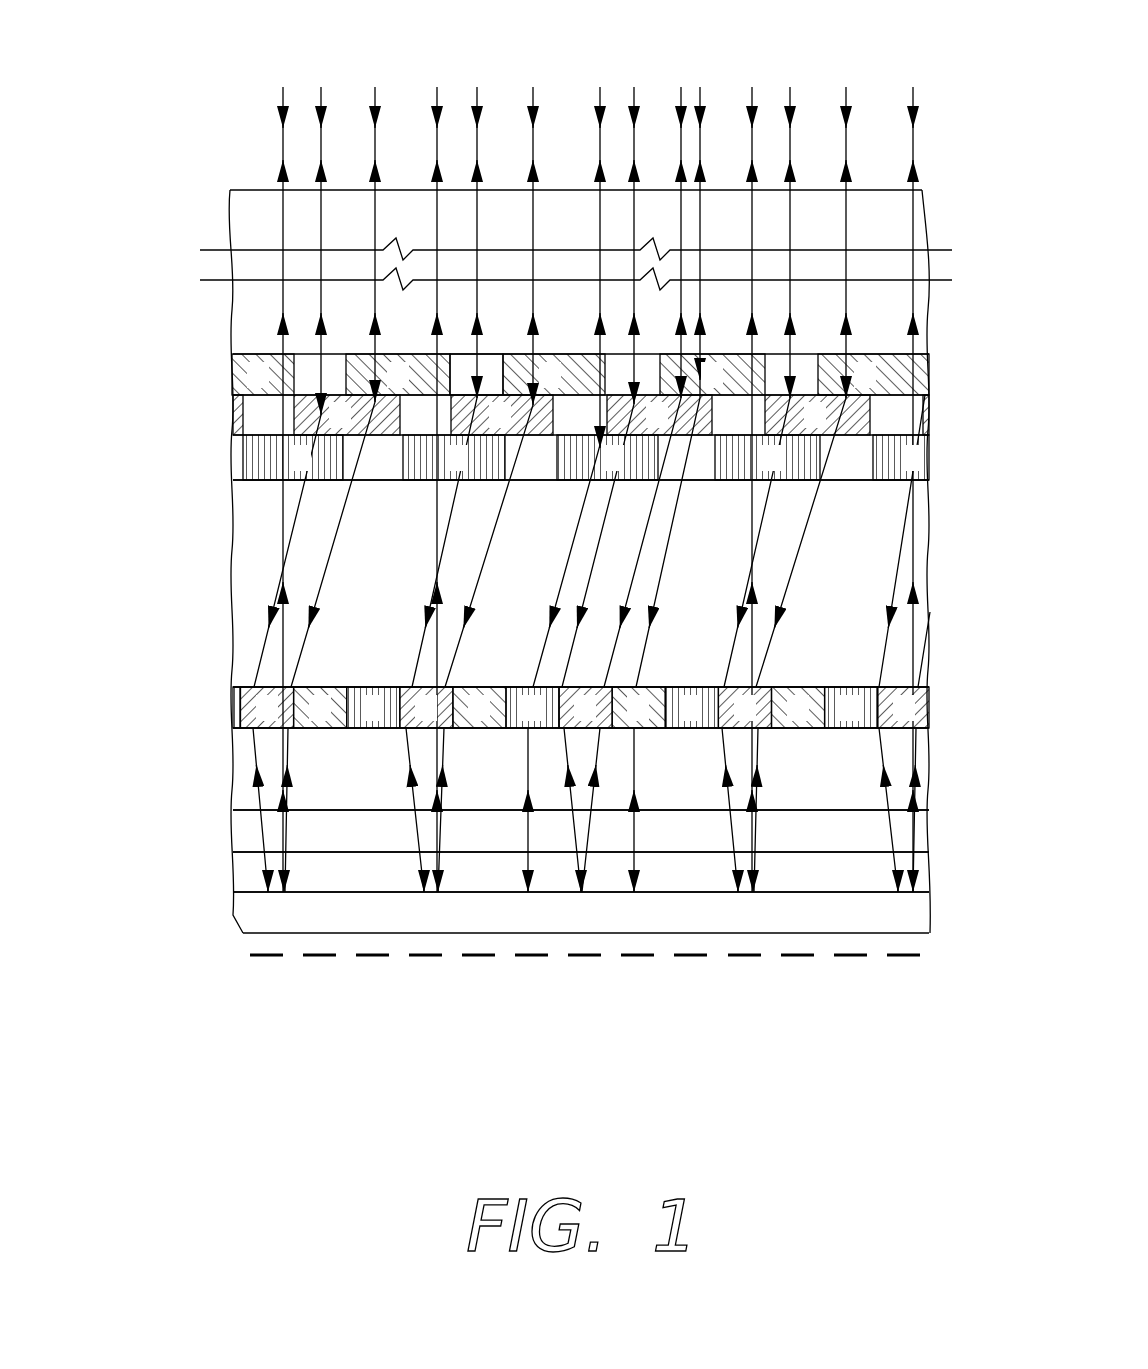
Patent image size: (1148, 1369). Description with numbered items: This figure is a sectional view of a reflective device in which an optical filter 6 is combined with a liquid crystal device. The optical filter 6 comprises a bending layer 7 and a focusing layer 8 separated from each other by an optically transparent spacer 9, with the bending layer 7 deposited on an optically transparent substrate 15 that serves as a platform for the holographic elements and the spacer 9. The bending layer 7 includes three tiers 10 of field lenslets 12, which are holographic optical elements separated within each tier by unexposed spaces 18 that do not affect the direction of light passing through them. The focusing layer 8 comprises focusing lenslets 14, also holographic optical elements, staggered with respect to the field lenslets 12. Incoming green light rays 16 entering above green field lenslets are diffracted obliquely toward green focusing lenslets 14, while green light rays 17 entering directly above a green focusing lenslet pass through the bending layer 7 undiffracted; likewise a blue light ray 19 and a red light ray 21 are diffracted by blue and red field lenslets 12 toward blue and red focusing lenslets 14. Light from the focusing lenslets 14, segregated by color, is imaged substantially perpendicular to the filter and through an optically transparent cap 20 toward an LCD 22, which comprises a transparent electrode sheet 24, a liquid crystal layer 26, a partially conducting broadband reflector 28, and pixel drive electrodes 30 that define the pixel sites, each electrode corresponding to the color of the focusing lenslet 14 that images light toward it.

The optical filter 6 is at (225, 352).
The bending layer 7 is at (187, 352).
The focusing layer 8 is at (543, 730).
The optically transparent spacer 9 is at (255, 565).
The tiers 10 is at (556, 414).
The field lenslets 12 is at (892, 362).
The focusing lenslets 14 is at (388, 730).
The optically transparent substrate 15 is at (252, 222).
The green light rays 16 is at (375, 100).
The green light rays 17 is at (283, 152).
The unexposed spaces 18 is at (458, 372).
The blue light ray 19 is at (700, 90).
The optically transparent cap 20 is at (250, 788).
The red light ray 21 is at (600, 92).
The LCD 22 is at (237, 957).
The transparent electrode sheet 24 is at (255, 827).
The liquid crystal layer 26 is at (255, 863).
The partially conducting broadband reflector 28 is at (253, 905).
The pixel drive electrodes 30 is at (747, 997).